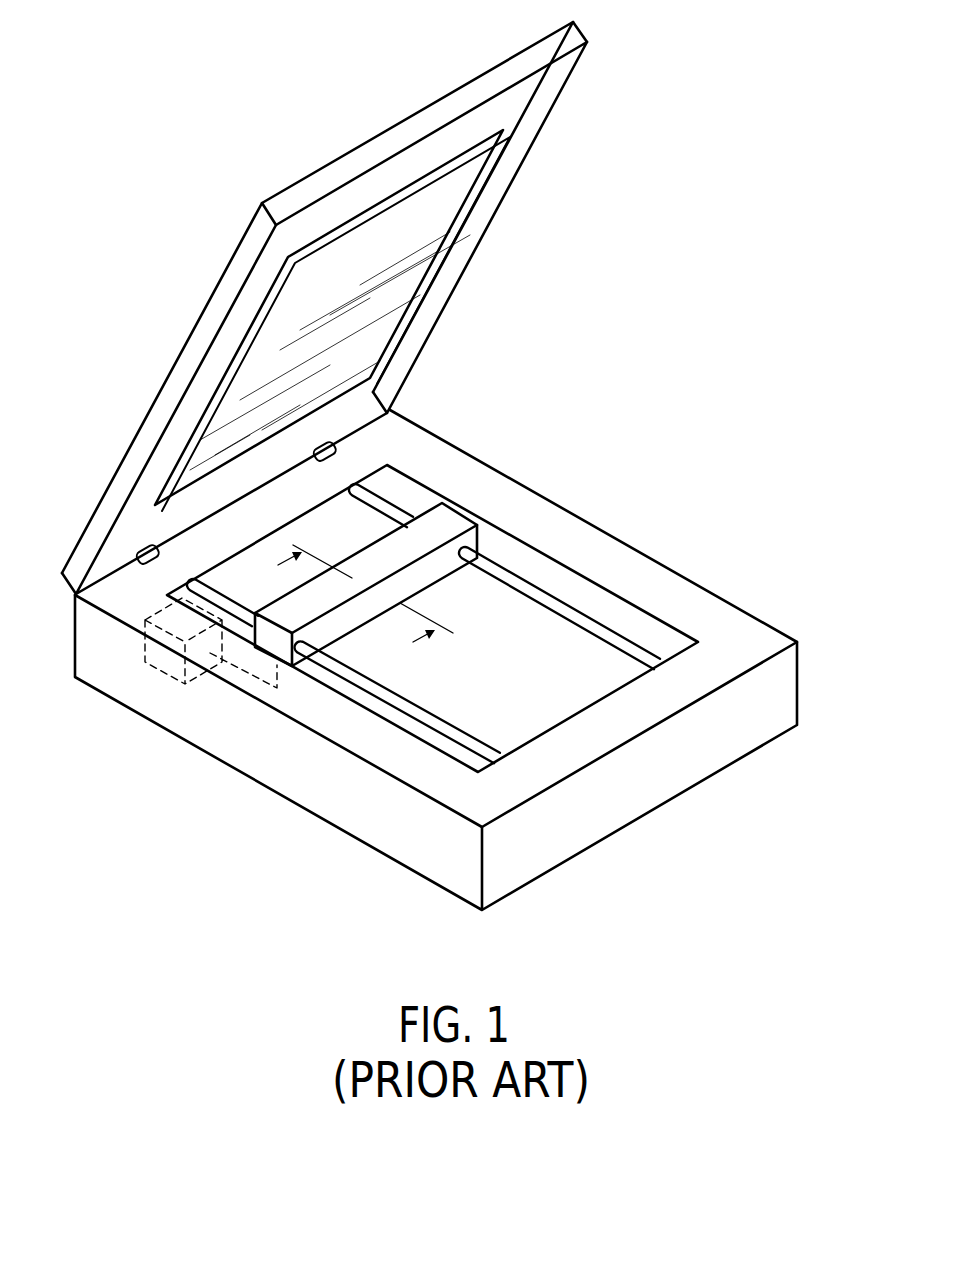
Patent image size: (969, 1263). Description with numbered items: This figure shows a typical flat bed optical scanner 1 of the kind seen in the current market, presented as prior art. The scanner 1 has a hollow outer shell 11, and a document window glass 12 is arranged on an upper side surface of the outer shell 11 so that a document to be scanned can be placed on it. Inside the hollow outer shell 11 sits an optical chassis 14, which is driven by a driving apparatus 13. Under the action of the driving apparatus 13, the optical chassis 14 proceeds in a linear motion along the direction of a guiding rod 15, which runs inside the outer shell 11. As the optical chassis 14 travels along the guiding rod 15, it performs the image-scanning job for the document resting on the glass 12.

The flat bed optical scanner 1 is at (429, 466).
The outer shell 11 is at (657, 578).
The glass 12 is at (510, 548).
The driving apparatus 13 is at (168, 657).
The optical chassis 14 is at (440, 520).
The guiding rod 15 is at (550, 597).